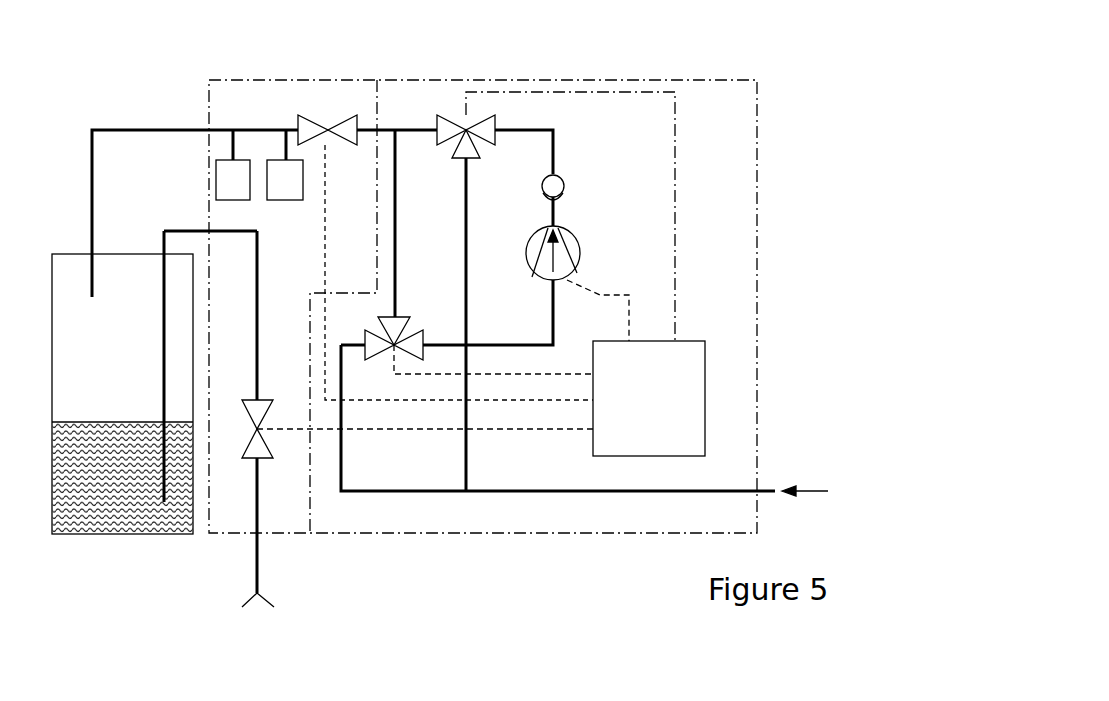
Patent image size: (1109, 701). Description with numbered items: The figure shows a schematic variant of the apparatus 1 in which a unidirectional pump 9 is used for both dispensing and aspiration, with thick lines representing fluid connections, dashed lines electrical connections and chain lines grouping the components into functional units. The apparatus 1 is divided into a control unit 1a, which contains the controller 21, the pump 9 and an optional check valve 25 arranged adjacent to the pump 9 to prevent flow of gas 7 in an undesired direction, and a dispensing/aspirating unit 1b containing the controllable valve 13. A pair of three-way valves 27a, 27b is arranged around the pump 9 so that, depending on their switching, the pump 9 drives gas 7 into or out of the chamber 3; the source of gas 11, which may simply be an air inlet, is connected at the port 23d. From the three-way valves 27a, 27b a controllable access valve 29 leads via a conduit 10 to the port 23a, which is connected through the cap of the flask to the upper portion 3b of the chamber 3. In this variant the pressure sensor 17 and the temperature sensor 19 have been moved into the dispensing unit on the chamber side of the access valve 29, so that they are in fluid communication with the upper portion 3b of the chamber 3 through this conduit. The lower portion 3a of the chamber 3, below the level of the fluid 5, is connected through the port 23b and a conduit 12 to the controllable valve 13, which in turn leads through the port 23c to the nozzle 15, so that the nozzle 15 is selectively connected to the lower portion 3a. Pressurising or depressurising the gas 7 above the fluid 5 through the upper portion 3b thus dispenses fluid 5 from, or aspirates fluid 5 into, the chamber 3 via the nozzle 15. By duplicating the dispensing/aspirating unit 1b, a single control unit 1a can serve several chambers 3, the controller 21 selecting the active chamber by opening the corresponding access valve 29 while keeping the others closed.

The apparatus 1 is at (757, 153).
The control unit 1a is at (468, 529).
The dispensing/aspirating unit 1b is at (290, 529).
The chamber 3 is at (128, 252).
The lower portion of chamber 3a is at (97, 552).
The upper portion of chamber 3b is at (58, 232).
The fluid 5 is at (143, 511).
The gas 7 is at (143, 323).
The pump 9 is at (580, 268).
The conduit 10 is at (252, 130).
The source of gas 11 is at (878, 514).
The conduit 12 is at (257, 268).
The controllable valve 13 is at (265, 462).
The nozzle 15 is at (268, 598).
The pressure sensor 17 is at (282, 200).
The temperature sensor 19 is at (208, 193).
The controller 21 is at (481, 398).
The port 23a is at (207, 130).
The port 23b is at (207, 231).
The port 23c is at (257, 535).
The port 23d is at (758, 490).
The check valve 25 is at (565, 196).
The three-way valve 27a is at (397, 330).
The three-way valve 27b is at (455, 155).
The controllable access valve 29 is at (328, 130).